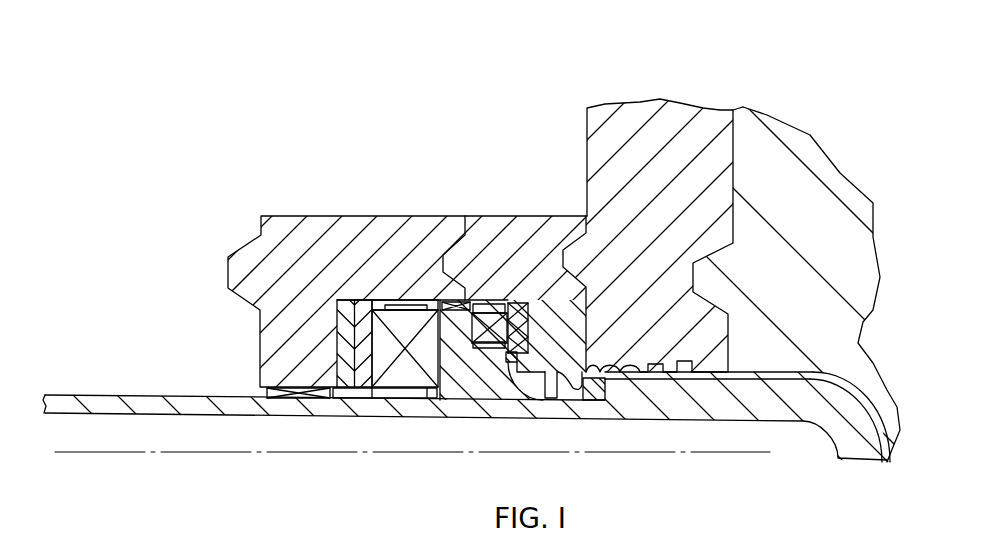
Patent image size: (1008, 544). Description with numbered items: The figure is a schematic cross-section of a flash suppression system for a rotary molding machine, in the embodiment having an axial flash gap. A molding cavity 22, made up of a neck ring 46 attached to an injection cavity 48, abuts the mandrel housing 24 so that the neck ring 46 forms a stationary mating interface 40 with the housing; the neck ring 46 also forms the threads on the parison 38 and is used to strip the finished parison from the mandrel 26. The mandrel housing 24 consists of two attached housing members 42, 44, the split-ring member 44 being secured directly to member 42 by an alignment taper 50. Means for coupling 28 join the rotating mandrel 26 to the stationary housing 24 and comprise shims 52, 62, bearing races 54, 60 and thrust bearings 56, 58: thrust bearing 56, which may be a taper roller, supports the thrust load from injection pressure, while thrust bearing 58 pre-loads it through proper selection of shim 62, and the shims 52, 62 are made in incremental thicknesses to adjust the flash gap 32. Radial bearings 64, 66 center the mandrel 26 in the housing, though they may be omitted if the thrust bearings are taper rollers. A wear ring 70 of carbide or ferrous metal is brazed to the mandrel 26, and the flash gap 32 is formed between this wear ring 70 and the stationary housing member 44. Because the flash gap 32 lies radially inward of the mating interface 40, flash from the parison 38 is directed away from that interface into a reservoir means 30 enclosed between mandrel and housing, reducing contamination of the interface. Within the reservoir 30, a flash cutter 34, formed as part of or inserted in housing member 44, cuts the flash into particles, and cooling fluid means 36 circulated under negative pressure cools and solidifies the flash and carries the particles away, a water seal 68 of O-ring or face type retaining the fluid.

The molding cavity 22 is at (763, 75).
The mandrel housing 24 is at (435, 196).
The mandrel 26 is at (697, 420).
The means for coupling 28 is at (385, 433).
The reservoir means 30 is at (517, 388).
The flash gap 32 is at (580, 404).
The flash cutter means 34 is at (550, 400).
The cooling fluid means 36 is at (467, 375).
The parison 38 is at (787, 380).
The stationary mating interface 40 is at (588, 292).
The housing member 42 is at (317, 217).
The housing member 44 is at (537, 216).
The neck ring 46 is at (643, 105).
The injection cavity 48 is at (812, 147).
The alignment taper 50 is at (443, 260).
The shim 52 is at (348, 380).
The bearing race 54 is at (363, 380).
The thrust bearing 56 is at (417, 380).
The thrust bearing 58 is at (473, 327).
The bearing race 60 is at (510, 302).
The shim 62 is at (522, 303).
The radial bearing 64 is at (283, 398).
The radial bearing 66 is at (460, 300).
The water seal 68 is at (497, 351).
The wear ring 70 is at (610, 385).